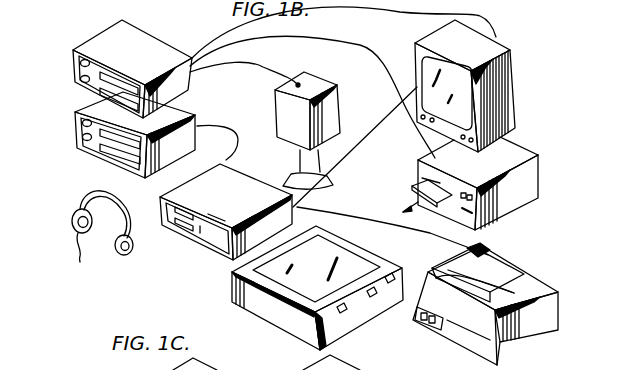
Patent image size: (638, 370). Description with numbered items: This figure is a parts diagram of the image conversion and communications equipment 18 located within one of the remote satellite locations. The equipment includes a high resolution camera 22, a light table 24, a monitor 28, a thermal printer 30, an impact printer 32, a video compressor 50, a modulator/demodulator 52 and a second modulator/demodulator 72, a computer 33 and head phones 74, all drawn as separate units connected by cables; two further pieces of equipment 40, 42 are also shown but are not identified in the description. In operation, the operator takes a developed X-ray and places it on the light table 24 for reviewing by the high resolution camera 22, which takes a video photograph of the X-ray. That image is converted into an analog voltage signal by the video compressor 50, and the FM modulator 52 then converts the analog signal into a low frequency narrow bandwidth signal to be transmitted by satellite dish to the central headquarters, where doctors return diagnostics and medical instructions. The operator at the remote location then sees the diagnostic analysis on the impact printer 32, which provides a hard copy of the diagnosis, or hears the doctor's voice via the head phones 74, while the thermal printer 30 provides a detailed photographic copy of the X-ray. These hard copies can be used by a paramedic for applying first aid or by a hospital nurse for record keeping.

In FIG. 1B, the image conversion and communications equipment 18 is at (100, 281).
In FIG. 1B, the high resolution camera 22 is at (338, 96).
In FIG. 1B, the light table 24 is at (263, 290).
In FIG. 1B, the monitor 28 is at (512, 90).
In FIG. 1B, the thermal printer 30 is at (433, 158).
In FIG. 1B, the impact printer 32 is at (535, 333).
In FIG. 1B, the computer 33 is at (205, 237).
In FIG. 1C, the component of FIG. 1C 40 is at (234, 369).
In FIG. 1C, the component of FIG. 1C 42 is at (393, 369).
In FIG. 1B, the video compressor 50 is at (160, 48).
In FIG. 1B, the modulator/demodulator 52 is at (83, 103).
In FIG. 1B, the modulator/demodulator 72 is at (123, 132).
In FIG. 1B, the head phones 74 is at (95, 230).